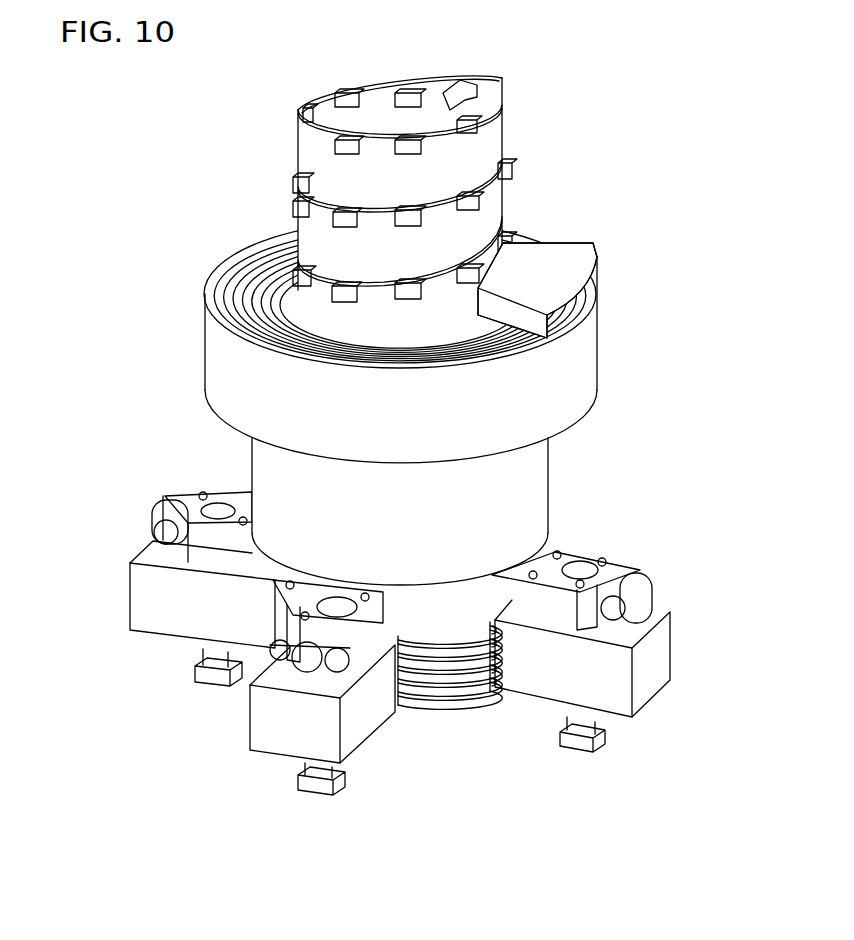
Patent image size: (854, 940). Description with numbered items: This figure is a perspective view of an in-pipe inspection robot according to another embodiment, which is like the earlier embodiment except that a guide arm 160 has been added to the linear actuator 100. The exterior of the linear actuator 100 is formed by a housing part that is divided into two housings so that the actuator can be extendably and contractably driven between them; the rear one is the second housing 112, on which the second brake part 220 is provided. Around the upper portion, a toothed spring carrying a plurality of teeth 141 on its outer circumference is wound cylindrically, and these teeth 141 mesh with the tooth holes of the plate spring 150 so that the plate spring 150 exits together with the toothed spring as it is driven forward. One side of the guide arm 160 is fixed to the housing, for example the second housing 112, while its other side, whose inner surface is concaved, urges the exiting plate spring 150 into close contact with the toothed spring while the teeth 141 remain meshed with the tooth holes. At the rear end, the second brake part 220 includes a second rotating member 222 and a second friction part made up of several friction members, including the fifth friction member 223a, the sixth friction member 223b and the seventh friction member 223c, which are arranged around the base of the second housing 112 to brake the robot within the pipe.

The linear actuator 100 is at (615, 352).
The second housing 112 is at (530, 478).
The teeth 141 is at (483, 200).
The plate spring 150 is at (305, 232).
The guide arm 160 is at (577, 253).
The second brake part 220 is at (429, 642).
The second rotating member 222 is at (443, 693).
The fifth friction member 223a is at (157, 615).
The sixth friction member 223b is at (248, 725).
The seventh friction member 223c is at (650, 683).